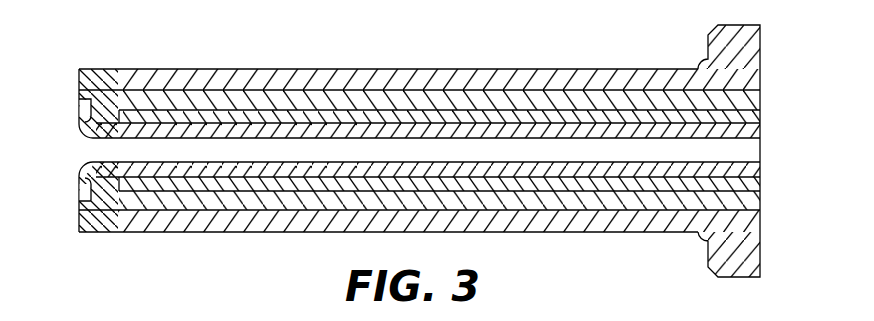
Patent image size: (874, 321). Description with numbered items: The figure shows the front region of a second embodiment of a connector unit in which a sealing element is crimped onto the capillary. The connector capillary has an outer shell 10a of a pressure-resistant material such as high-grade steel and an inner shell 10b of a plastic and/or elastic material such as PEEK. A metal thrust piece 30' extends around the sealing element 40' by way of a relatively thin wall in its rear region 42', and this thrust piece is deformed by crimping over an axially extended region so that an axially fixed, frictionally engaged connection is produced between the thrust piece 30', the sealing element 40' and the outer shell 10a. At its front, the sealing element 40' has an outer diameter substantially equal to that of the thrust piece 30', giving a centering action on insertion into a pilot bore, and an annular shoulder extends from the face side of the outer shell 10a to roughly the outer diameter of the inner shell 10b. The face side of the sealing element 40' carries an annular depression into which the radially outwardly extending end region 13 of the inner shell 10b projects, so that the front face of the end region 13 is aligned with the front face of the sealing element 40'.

The outer shell 10a is at (458, 83).
The inner shell 10b is at (427, 181).
The end region 13 is at (86, 167).
The thrust piece 30' is at (419, 59).
The sealing element 40' is at (122, 88).
The rear region 42' is at (439, 72).